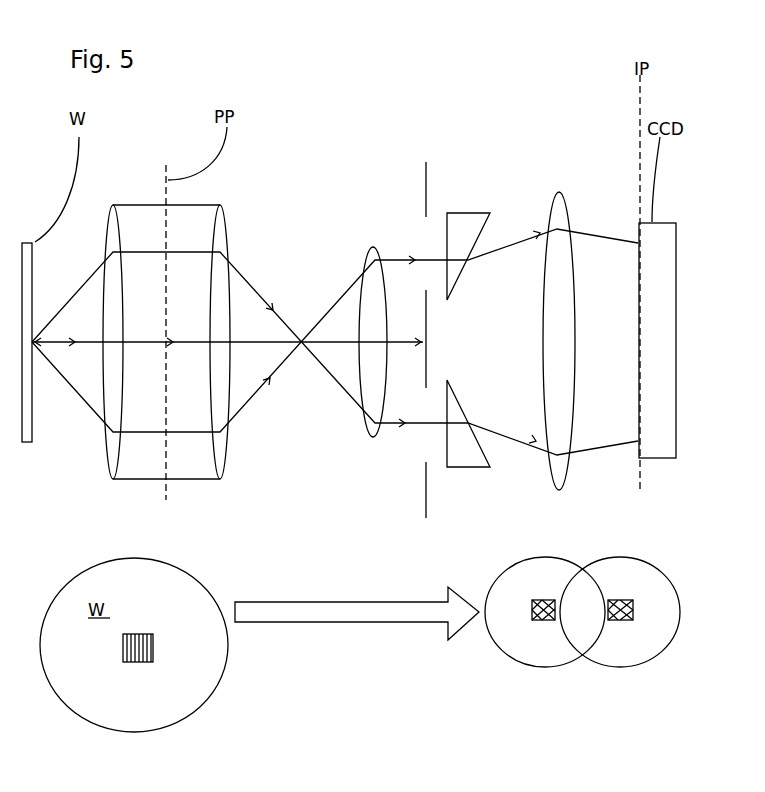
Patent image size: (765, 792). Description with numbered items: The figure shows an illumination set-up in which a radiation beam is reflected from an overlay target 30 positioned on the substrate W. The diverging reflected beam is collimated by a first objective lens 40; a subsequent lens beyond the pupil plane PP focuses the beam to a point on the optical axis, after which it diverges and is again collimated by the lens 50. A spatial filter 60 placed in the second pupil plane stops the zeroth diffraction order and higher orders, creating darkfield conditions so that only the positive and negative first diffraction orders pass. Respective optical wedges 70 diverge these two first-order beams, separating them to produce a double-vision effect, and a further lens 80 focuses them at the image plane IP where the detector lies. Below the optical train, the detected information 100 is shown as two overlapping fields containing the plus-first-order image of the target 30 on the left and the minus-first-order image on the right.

The overlay target 30 is at (122, 645).
The first objective lens 40 is at (115, 233).
The lens 50 is at (368, 258).
The spatial filter 60 is at (426, 187).
The optical wedges 70 is at (463, 213).
The further lens 80 is at (566, 215).
The detected information 100 is at (557, 678).